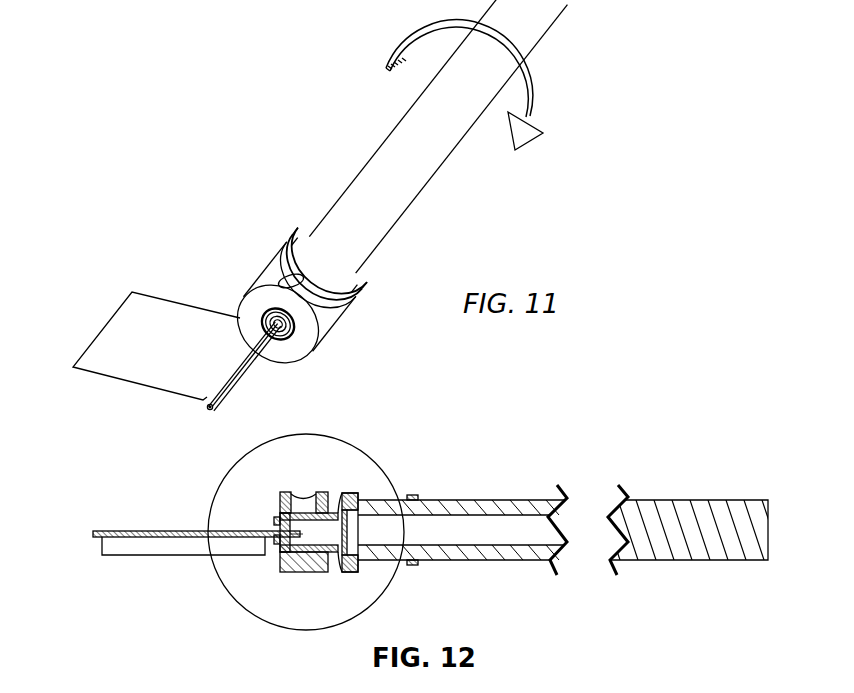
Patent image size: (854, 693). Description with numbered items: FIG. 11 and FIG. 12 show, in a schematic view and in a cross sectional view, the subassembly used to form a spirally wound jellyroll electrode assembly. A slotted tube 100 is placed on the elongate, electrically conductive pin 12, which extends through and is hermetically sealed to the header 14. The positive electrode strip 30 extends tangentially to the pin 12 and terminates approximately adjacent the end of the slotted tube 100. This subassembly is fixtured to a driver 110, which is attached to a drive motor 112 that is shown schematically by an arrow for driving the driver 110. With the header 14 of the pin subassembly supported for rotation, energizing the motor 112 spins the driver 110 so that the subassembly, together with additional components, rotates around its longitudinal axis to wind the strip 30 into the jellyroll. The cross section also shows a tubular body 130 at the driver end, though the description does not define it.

In FIG. 11, the pin 12 is at (205, 407).
In FIG. 11, the header 14 is at (299, 336).
In FIG. 12, the header 14 is at (271, 556).
In FIG. 11, the positive electrode strip 30 is at (113, 287).
In FIG. 11, the slotted tube 100 is at (216, 402).
In FIG. 11, the driver 110 is at (417, 200).
In FIG. 11, the drive motor 112 is at (534, 87).
In FIG. 12, the tubular body 130 is at (570, 530).